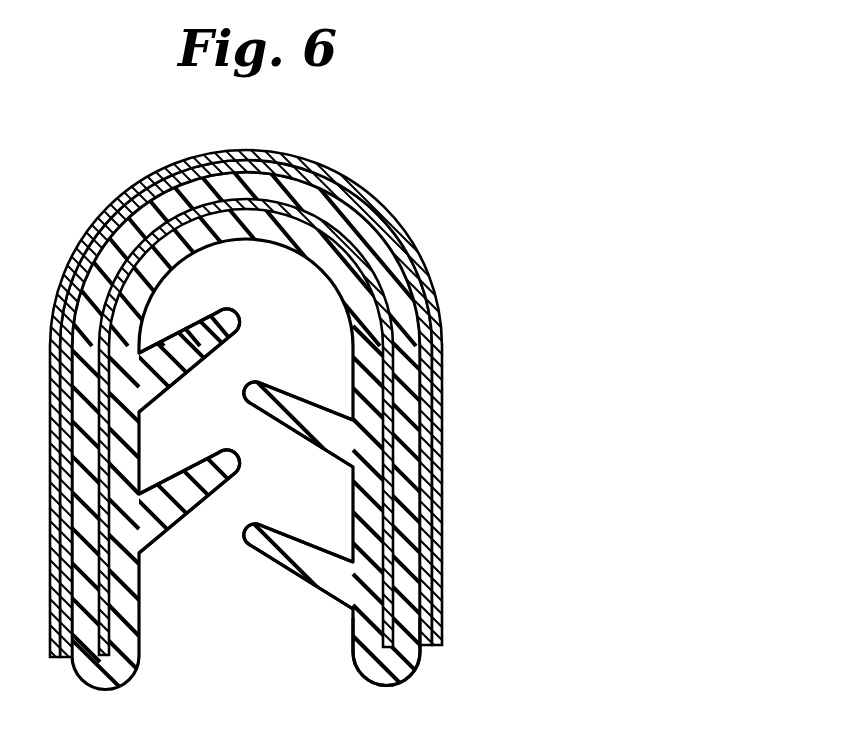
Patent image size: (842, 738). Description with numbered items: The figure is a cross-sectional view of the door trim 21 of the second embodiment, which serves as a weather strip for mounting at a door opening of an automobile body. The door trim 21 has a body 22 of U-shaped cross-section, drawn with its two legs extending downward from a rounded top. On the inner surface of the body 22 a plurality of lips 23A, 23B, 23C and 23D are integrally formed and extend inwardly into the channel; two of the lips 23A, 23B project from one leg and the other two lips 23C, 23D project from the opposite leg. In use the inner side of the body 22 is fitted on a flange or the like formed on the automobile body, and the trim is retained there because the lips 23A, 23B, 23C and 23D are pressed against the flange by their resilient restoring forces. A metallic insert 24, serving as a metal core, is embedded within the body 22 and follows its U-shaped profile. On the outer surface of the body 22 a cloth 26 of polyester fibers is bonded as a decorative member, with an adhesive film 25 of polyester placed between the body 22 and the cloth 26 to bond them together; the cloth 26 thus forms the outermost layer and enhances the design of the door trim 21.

The door trim 21 is at (421, 434).
The body 22 is at (418, 528).
The lip 23A is at (218, 311).
The lip 23B is at (217, 452).
The lip 23C is at (288, 391).
The lip 23D is at (281, 525).
The metallic insert 24 is at (355, 622).
The adhesive film 25 is at (420, 358).
The cloth 26 is at (442, 408).